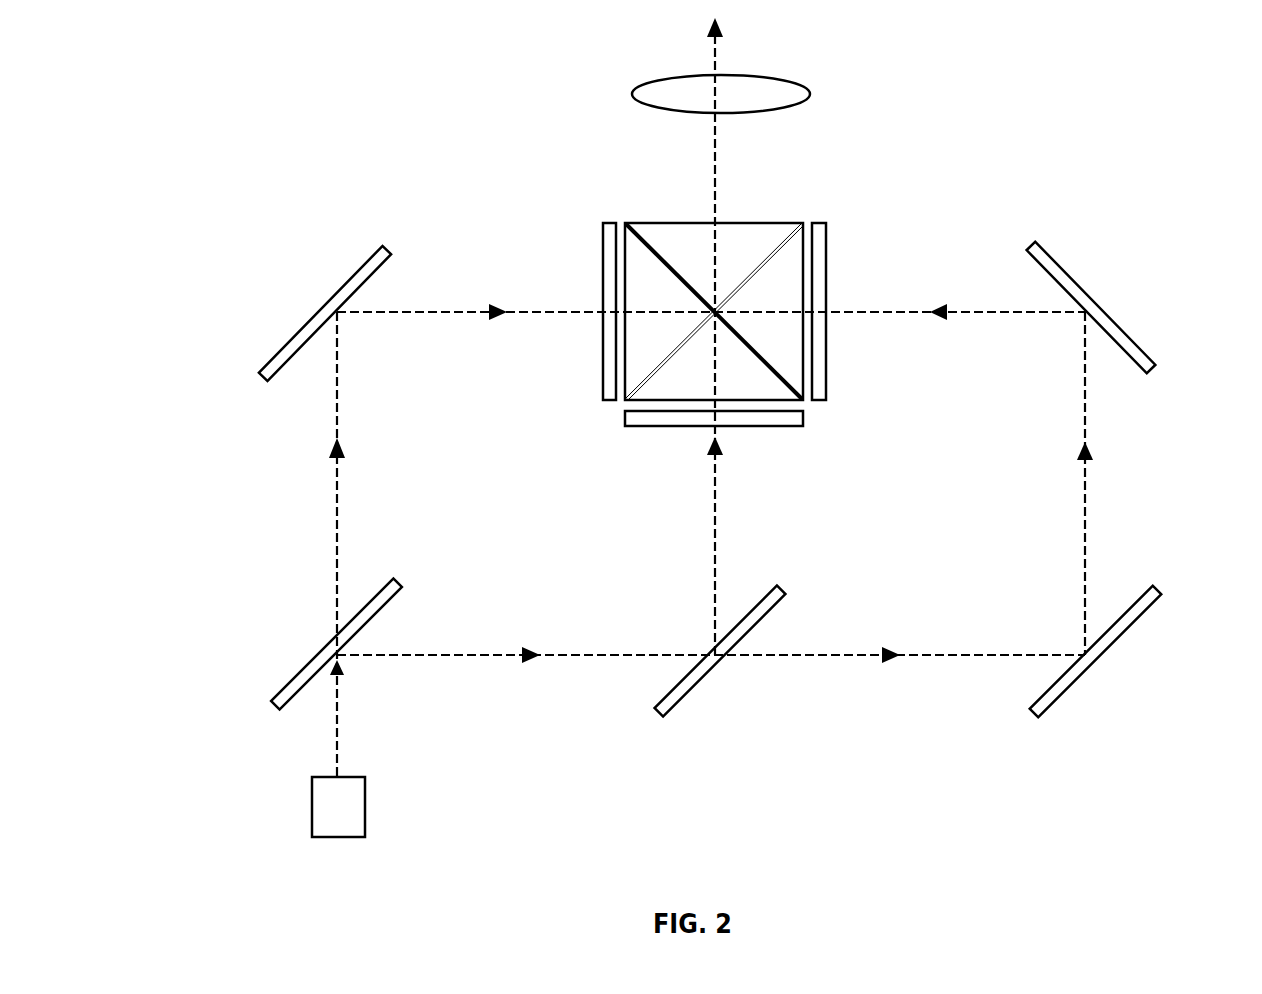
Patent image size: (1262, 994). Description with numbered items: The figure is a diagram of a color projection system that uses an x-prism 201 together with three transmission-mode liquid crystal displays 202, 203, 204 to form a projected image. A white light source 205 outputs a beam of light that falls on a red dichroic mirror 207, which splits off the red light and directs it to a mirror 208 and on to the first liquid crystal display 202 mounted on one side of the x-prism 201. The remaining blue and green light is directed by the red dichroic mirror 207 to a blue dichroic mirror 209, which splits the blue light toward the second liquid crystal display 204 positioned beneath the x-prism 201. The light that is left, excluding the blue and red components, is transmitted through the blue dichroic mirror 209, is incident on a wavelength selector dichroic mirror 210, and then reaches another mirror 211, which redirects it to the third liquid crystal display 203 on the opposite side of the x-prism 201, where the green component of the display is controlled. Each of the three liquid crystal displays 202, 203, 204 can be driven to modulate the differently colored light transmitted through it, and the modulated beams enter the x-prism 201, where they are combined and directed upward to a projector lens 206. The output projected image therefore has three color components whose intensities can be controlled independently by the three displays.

The x-prism 201 is at (663, 222).
The liquid crystal display 202 is at (603, 230).
The third liquid crystal display 203 is at (823, 223).
The second liquid crystal display 204 is at (757, 425).
The white light source 205 is at (365, 782).
The projector lens 206 is at (637, 82).
The red dichroic mirror 207 is at (312, 658).
The mirror 208 is at (357, 270).
The blue dichroic mirror 209 is at (695, 690).
The wavelength selector dichroic mirror 210 is at (1140, 618).
The mirror 211 is at (1083, 292).